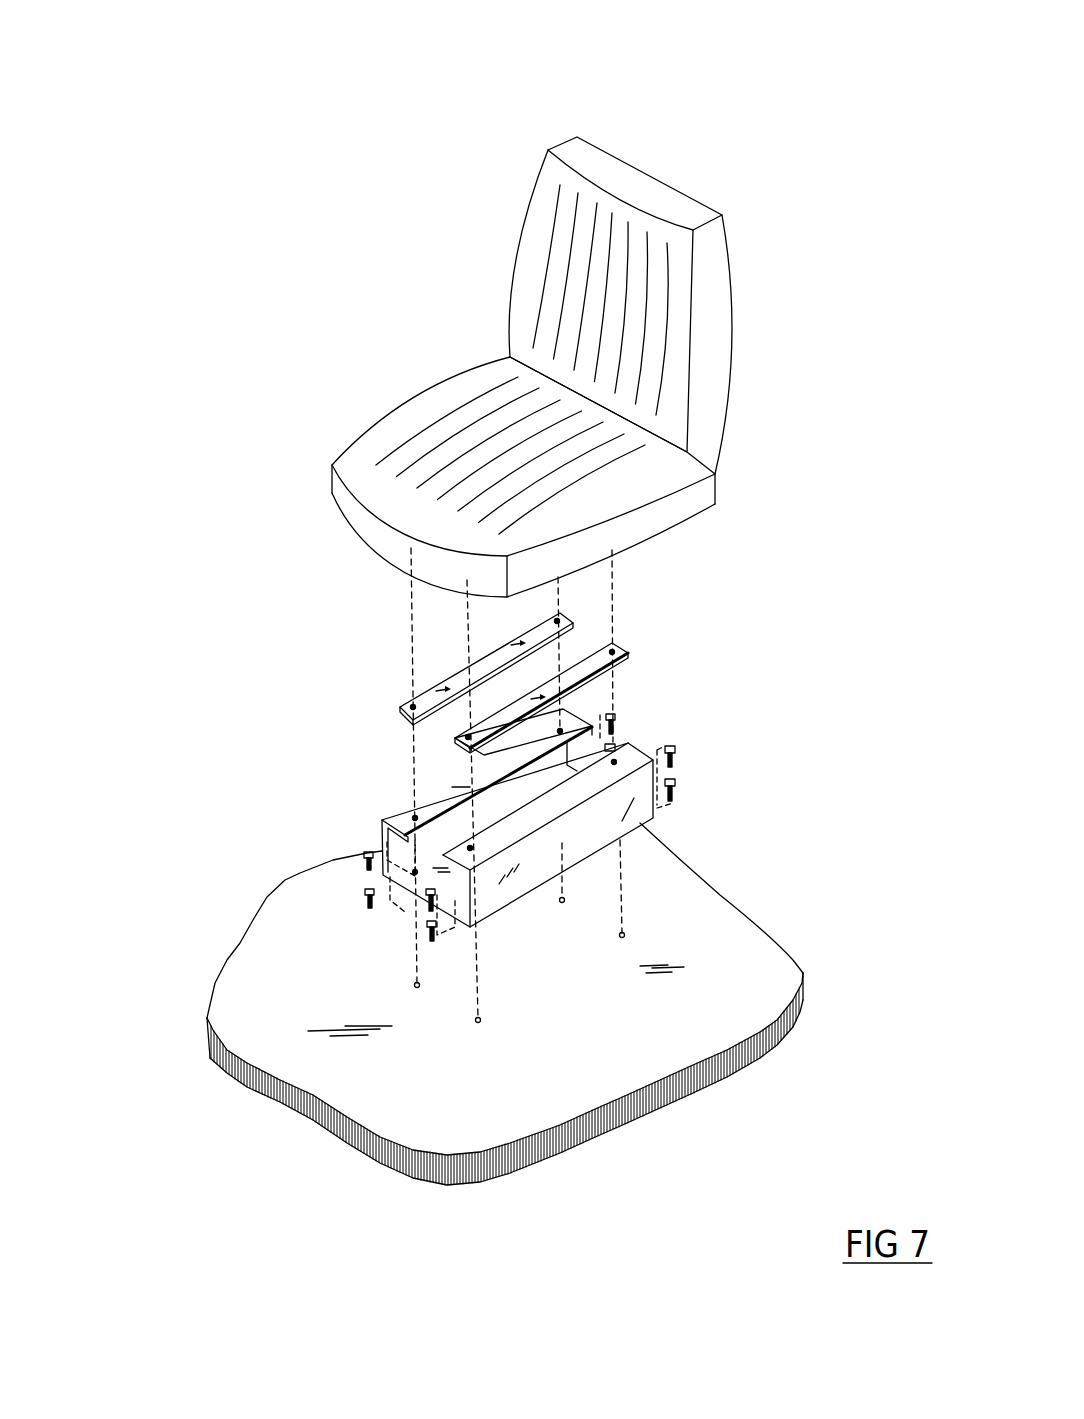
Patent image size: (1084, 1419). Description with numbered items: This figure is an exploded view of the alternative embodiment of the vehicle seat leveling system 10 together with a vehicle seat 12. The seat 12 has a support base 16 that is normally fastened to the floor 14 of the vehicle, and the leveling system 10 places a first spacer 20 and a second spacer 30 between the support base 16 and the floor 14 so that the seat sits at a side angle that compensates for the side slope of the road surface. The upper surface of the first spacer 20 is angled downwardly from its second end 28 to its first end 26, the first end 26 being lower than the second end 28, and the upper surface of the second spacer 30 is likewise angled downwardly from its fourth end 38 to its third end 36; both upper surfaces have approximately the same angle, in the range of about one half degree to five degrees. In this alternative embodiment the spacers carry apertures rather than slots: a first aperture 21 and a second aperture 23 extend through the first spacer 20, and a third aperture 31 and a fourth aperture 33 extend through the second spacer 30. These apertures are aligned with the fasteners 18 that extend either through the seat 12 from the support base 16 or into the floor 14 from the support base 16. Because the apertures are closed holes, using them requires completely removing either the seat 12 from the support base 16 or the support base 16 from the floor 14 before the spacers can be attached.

The vehicle seat leveling system 10 is at (838, 95).
The seat 12 is at (408, 392).
The floor 14 is at (250, 1031).
The support base 16 is at (483, 898).
The fasteners 18 is at (676, 750).
The first spacer 20 is at (507, 752).
The first aperture 21 is at (614, 650).
The second aperture 23 is at (440, 738).
The first end 26 is at (593, 730).
The second end 28 is at (588, 652).
The second spacer 30 is at (385, 717).
The third aperture 31 is at (558, 620).
The fourth aperture 33 is at (413, 704).
The third end 36 is at (455, 738).
The fourth end 38 is at (415, 707).